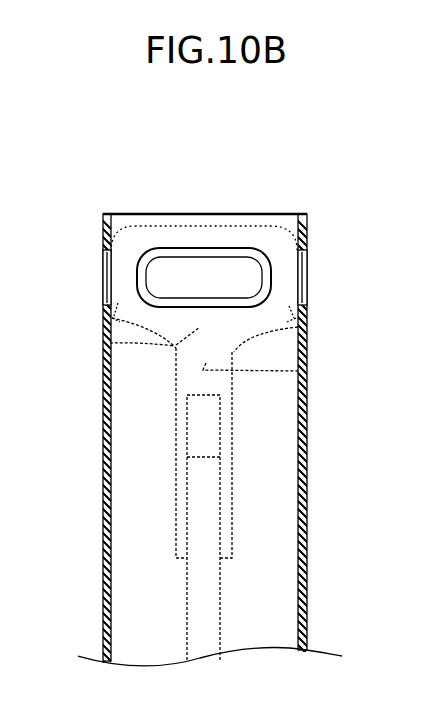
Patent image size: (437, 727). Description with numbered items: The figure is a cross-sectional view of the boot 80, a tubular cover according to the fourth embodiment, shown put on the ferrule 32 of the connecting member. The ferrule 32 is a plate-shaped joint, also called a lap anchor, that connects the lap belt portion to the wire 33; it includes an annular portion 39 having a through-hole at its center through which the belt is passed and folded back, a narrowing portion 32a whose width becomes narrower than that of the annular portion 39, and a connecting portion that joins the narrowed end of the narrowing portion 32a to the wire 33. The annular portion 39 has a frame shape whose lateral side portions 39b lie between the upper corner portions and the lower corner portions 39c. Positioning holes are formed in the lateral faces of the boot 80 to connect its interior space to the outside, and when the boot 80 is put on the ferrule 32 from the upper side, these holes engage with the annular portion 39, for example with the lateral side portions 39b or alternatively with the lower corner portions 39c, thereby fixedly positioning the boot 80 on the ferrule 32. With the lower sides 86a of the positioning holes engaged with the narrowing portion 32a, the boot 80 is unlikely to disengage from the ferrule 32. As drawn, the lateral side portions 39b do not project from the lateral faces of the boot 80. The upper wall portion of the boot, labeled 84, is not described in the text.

The boot 80 is at (307, 556).
The top wall 84 is at (210, 214).
The lateral side portions 39b is at (103, 267).
The lower sides of the positioning holes 86a is at (103, 288).
The lower corner portions 39c is at (112, 318).
The narrowing portion 32a is at (103, 333).
The annular portion 39 is at (103, 345).
The ferrule 32 is at (298, 371).
The wire 33 is at (203, 621).